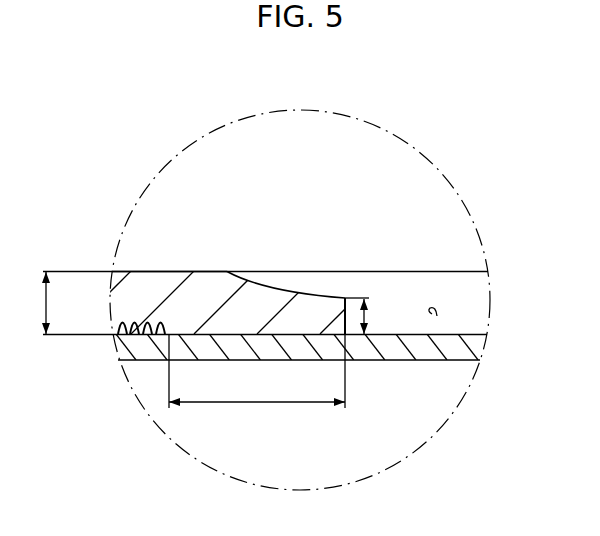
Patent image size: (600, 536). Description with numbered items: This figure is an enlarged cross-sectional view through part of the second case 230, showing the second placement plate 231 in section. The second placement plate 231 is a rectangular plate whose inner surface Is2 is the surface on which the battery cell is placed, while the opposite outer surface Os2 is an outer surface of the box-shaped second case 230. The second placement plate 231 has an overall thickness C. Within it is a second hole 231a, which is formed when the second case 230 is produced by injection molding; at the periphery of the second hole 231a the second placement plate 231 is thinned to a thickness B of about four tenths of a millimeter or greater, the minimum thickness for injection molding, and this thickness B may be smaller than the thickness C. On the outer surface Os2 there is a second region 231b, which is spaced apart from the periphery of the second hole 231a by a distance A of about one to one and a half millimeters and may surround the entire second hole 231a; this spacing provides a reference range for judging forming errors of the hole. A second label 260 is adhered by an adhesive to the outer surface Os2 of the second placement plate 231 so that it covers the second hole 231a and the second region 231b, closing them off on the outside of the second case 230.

The second case 230 is at (160, 271).
The second placement plate 231 is at (140, 290).
The second hole 231a is at (437, 316).
The second region 231b is at (143, 339).
The second label 260 is at (428, 363).
The inner surface Is2 is at (205, 271).
The outer surface Os2 is at (204, 340).
The distance A is at (257, 382).
The thickness B is at (366, 316).
The thickness C is at (37, 303).